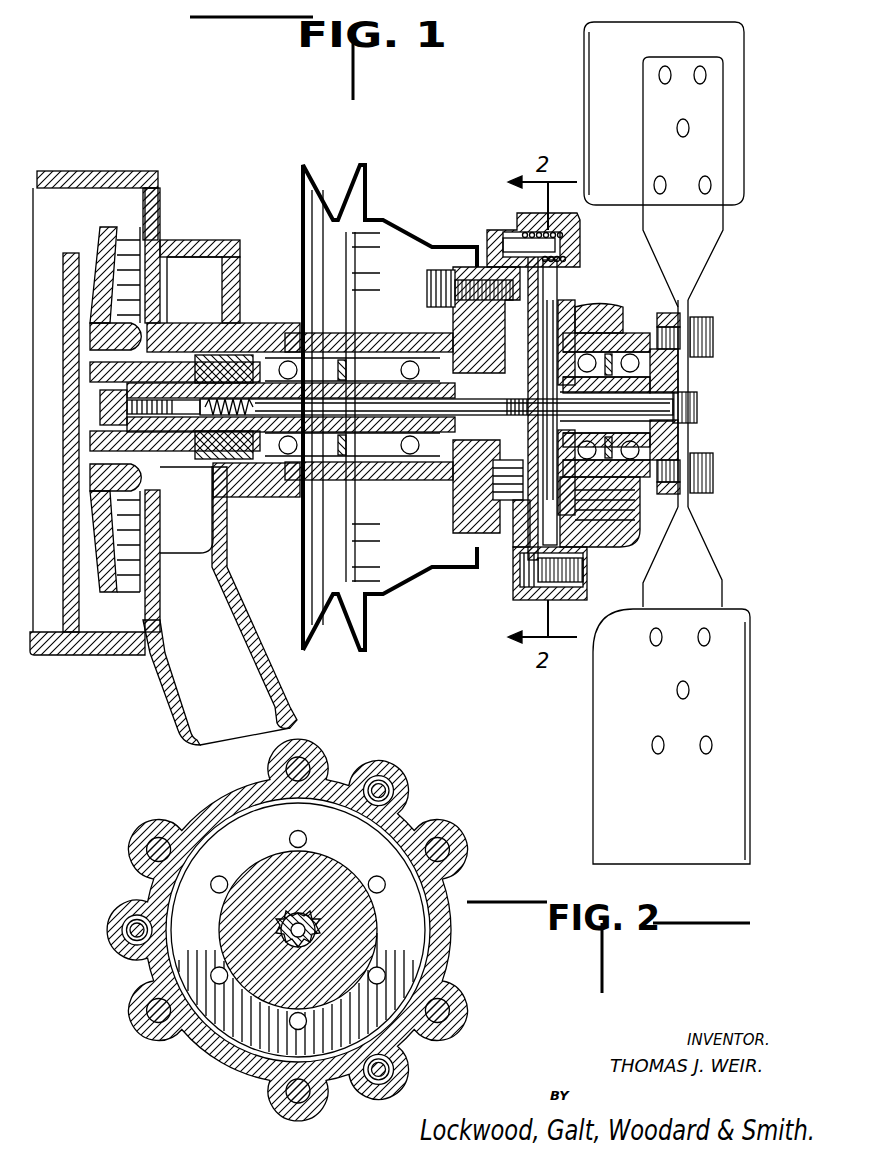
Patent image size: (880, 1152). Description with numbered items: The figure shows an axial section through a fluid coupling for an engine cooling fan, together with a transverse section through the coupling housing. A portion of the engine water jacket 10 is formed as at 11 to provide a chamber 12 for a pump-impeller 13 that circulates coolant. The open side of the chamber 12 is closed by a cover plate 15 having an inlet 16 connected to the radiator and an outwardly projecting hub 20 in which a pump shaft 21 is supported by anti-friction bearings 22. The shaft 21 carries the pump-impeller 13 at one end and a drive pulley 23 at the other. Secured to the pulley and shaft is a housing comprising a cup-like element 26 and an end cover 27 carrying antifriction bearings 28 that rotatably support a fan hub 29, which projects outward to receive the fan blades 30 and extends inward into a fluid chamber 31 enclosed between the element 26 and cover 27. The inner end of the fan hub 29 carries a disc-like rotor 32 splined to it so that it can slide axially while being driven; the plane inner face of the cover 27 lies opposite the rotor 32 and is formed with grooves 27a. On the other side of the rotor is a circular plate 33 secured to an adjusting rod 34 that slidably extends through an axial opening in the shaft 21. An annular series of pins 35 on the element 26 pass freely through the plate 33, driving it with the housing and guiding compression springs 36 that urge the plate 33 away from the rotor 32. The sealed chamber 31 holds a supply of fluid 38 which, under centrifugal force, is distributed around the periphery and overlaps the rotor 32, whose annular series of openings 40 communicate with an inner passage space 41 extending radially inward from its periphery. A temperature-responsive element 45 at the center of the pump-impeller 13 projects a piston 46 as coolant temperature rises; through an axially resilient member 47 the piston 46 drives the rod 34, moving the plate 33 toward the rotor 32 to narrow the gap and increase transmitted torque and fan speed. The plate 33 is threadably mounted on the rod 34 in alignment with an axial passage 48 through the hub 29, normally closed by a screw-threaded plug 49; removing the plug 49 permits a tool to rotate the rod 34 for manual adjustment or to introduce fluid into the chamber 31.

In FIG. 1, the water jacket 10 is at (93, 647).
In FIG. 1, the formed portion of water jacket 11 is at (148, 623).
In FIG. 1, the pump chamber 12 is at (112, 612).
In FIG. 1, the pump-impeller 13 is at (105, 565).
In FIG. 1, the cover plate 15 is at (152, 212).
In FIG. 1, the inlet 16 is at (200, 673).
In FIG. 1, the hub 20 is at (257, 323).
In FIG. 1, the pump shaft 21 is at (352, 385).
In FIG. 1, the anti-friction bearings 22 is at (290, 362).
In FIG. 1, the drive pulley 23 is at (367, 193).
In FIG. 1, the cup-like element 26 is at (517, 565).
In FIG. 1, the end cover 27 is at (688, 305).
In FIG. 1, the grooves 27a is at (660, 245).
In FIG. 1, the antifriction bearings 28 is at (700, 340).
In FIG. 1, the fan hub 29 is at (668, 372).
In FIG. 2, the fan hub 29 is at (288, 958).
In FIG. 1, the fan blades 30 is at (735, 152).
In FIG. 1, the fluid chamber 31 is at (517, 545).
In FIG. 1, the rotor 32 is at (575, 338).
In FIG. 2, the rotor 32 is at (368, 955).
In FIG. 1, the circular plate 33 is at (522, 268).
In FIG. 1, the adjusting rod 34 is at (377, 410).
In FIG. 2, the adjusting rod 34 is at (317, 930).
In FIG. 1, the pins 35 is at (510, 213).
In FIG. 2, the pins 35 is at (375, 777).
In FIG. 1, the compression springs 36 is at (560, 230).
In FIG. 2, the compression springs 36 is at (392, 784).
In FIG. 1, the fluid 38 is at (512, 485).
In FIG. 1, the openings 40 is at (540, 340).
In FIG. 2, the openings 40 is at (384, 888).
In FIG. 1, the inner passage space 41 is at (557, 290).
In FIG. 2, the inner passage space 41 is at (380, 850).
In FIG. 1, the temperature-responsive element 45 is at (100, 412).
In FIG. 1, the piston 46 is at (167, 380).
In FIG. 1, the axially resilient member 47 is at (222, 406).
In FIG. 1, the axial passage 48 is at (688, 438).
In FIG. 1, the screw-threaded plug 49 is at (698, 398).